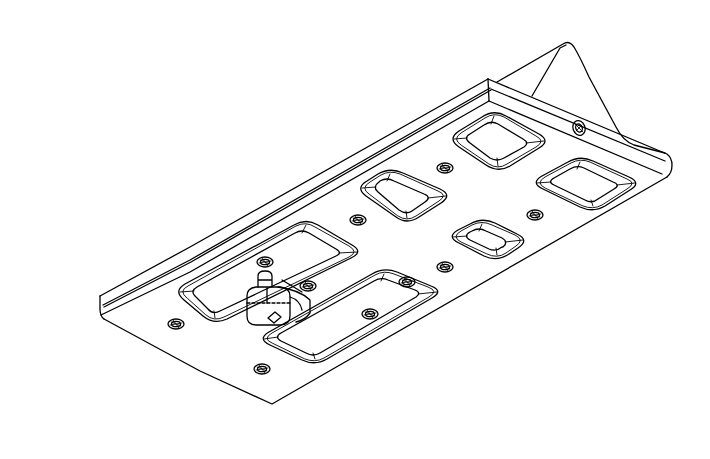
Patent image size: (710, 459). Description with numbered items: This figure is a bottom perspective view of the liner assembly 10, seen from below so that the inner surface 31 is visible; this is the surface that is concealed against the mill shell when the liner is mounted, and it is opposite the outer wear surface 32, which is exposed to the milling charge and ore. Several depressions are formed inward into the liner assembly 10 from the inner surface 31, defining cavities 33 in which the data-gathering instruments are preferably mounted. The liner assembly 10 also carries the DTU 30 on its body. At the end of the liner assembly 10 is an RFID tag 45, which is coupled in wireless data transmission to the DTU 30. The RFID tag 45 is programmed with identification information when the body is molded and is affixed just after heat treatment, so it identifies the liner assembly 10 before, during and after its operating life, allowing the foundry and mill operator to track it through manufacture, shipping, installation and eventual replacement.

The liner assembly 10 is at (624, 84).
The DTU 30 is at (256, 326).
The inner surface 31 is at (545, 238).
The outer wear surface 32 is at (538, 68).
The cavities 33 is at (497, 129).
The RFID tag 45 is at (586, 125).